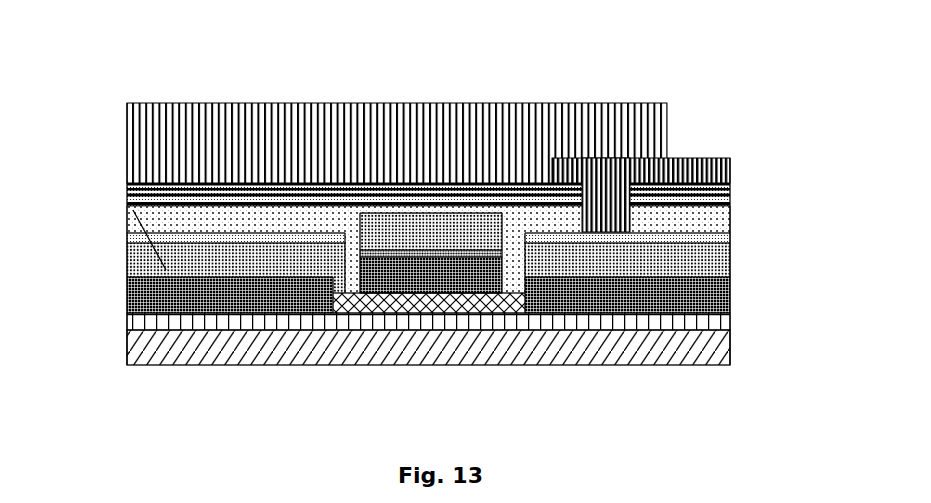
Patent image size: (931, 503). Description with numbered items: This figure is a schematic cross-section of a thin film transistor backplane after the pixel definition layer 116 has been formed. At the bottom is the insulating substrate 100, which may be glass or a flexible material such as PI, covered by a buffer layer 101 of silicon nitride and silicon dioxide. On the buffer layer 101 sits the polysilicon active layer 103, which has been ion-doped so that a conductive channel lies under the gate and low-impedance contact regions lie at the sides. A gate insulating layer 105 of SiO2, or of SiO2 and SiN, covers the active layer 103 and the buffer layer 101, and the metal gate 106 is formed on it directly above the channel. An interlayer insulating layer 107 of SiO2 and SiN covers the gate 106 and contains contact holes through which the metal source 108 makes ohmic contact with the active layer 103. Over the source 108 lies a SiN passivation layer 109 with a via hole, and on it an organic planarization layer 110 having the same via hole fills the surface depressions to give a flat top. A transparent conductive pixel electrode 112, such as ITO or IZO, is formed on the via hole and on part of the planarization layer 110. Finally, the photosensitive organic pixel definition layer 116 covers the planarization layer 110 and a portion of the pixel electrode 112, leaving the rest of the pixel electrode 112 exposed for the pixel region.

The insulating substrate 100 is at (193, 364).
The buffer layer 101 is at (132, 278).
The polysilicon active layer 103 is at (408, 313).
The gate insulating layer 105 is at (130, 225).
The gate 106 is at (497, 252).
The interlayer insulating layer 107 is at (710, 258).
The source 108 is at (130, 184).
The passivation layer 109 is at (676, 158).
The organic planarization layer 110 is at (176, 196).
The pixel electrode 112 is at (552, 222).
The pixel definition layer 116 is at (390, 137).